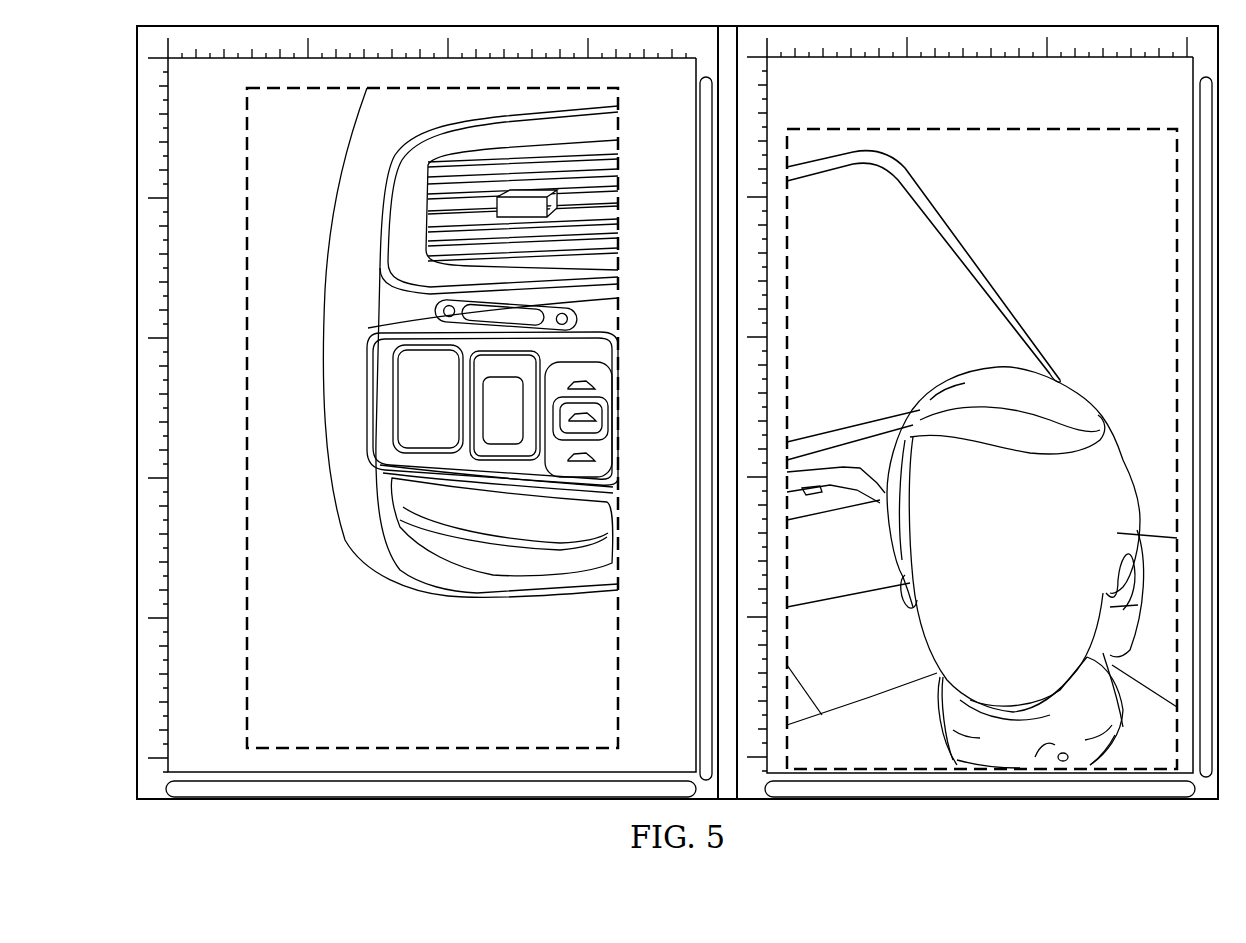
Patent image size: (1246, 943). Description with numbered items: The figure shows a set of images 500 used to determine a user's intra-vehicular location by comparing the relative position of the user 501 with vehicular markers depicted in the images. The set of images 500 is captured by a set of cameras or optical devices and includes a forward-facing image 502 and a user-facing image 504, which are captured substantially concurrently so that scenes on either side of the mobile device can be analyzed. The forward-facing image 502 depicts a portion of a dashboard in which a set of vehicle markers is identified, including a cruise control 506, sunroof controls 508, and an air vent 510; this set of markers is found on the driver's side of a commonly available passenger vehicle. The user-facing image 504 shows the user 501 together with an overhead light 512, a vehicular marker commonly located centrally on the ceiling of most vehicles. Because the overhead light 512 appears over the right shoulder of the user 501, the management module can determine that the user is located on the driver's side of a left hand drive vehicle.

The set of images 500 is at (128, 276).
The user 501 is at (1077, 393).
The forward-facing image 502 is at (248, 290).
The user-facing image 504 is at (1051, 130).
The cruise control 506 is at (502, 452).
The sunroof controls 508 is at (622, 362).
The air vent 510 is at (612, 177).
The overhead light 512 is at (813, 517).